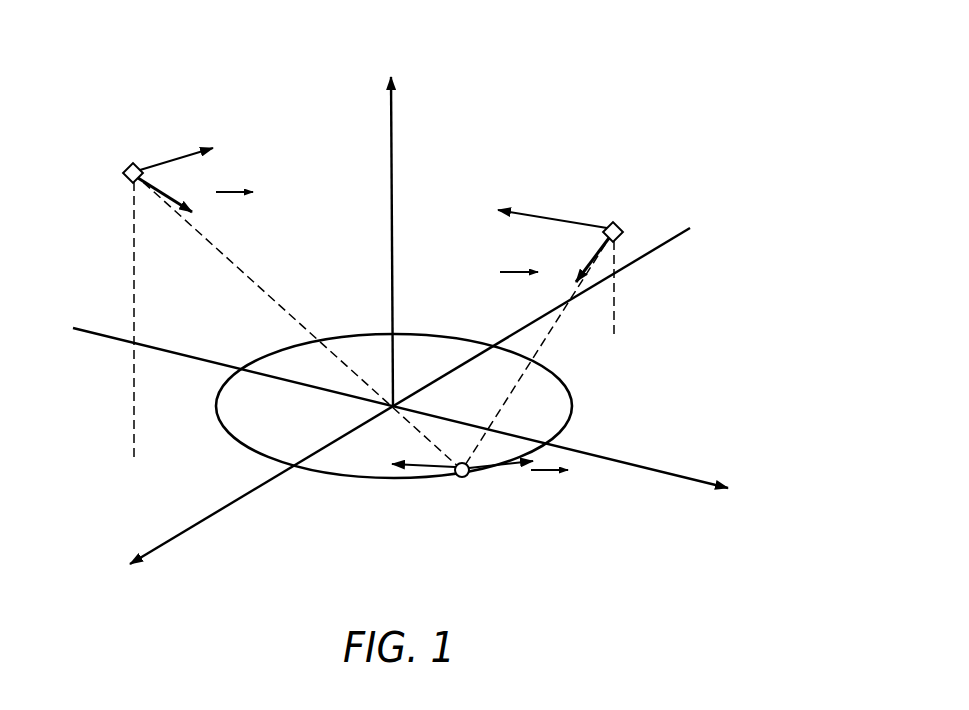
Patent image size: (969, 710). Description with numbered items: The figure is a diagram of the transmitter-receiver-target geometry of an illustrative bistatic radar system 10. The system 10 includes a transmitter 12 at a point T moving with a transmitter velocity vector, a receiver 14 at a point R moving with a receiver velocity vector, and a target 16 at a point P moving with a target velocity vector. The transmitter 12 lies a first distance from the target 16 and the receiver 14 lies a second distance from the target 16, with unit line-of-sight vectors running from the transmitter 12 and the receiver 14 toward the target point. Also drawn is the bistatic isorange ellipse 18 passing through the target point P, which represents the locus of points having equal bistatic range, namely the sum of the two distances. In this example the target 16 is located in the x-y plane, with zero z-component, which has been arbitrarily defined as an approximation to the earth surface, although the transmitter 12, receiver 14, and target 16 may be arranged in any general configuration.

The bistatic radar system 10 is at (550, 97).
The transmitter 12 is at (127, 168).
The receiver 14 is at (619, 227).
The target 16 is at (457, 478).
The bistatic isorange ellipse 18 is at (325, 476).